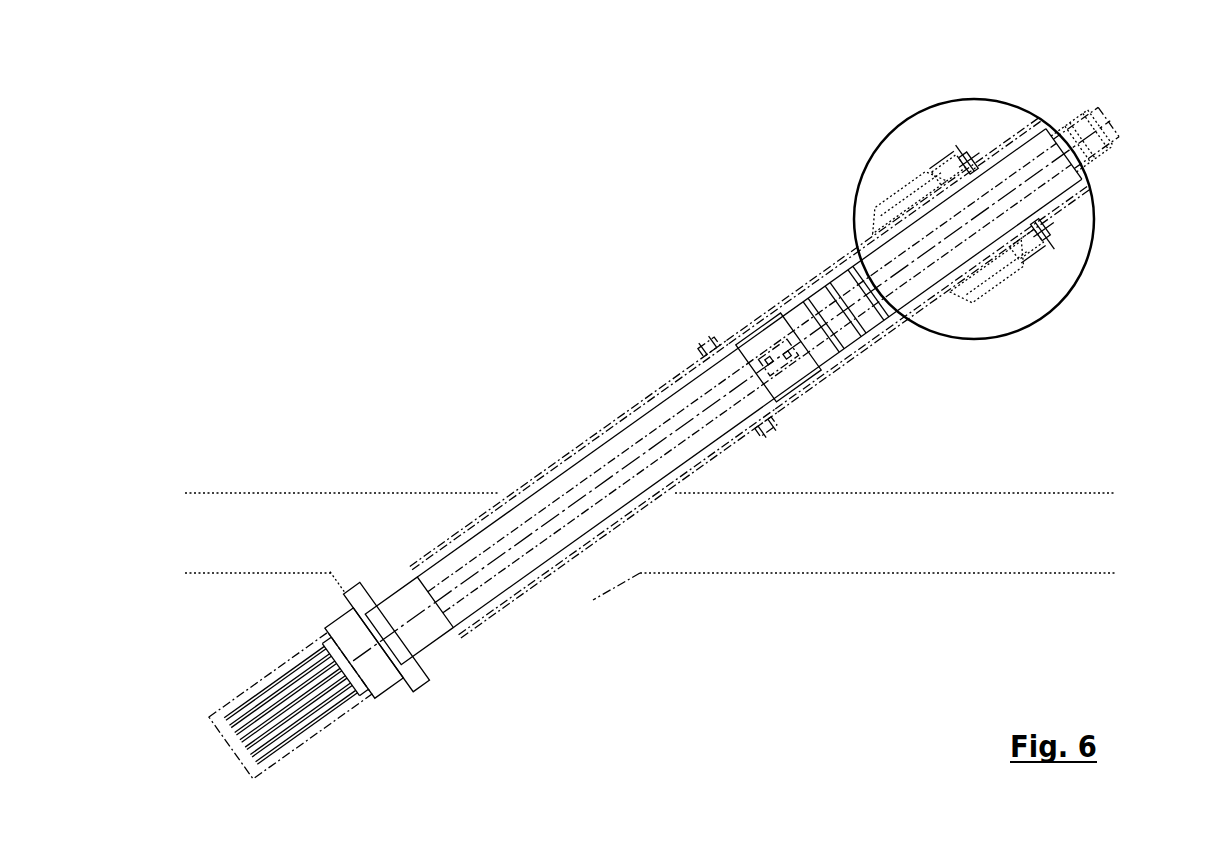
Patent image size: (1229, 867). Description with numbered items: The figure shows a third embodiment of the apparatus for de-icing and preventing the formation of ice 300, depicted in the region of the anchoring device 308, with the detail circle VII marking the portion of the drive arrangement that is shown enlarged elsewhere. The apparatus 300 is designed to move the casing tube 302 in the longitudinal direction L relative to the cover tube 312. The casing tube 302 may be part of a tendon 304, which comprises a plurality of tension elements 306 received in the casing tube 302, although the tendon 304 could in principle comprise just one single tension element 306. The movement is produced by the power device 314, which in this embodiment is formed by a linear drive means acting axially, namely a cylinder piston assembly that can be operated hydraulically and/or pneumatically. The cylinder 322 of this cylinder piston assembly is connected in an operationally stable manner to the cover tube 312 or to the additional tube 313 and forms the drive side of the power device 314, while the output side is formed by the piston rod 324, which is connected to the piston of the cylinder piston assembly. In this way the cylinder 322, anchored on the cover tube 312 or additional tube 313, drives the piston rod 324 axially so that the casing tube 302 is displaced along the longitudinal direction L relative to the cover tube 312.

The apparatus for de-icing and preventing the formation of ice 300 is at (648, 205).
The casing tube 302 is at (1085, 145).
The tendon 304 is at (530, 548).
The tension elements 306 is at (293, 692).
The anchoring device 308 is at (380, 377).
The cover tube 312 is at (460, 537).
The additional tube 313 is at (848, 355).
The power device 314 is at (920, 185).
The cylinder 322 is at (908, 200).
The piston rod 324 is at (945, 175).
The detail view VII is at (1090, 240).
The longitudinal direction L is at (1115, 118).